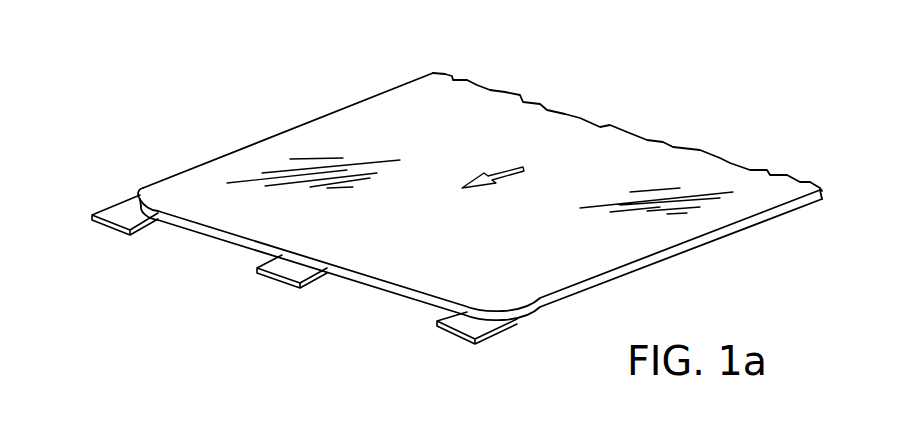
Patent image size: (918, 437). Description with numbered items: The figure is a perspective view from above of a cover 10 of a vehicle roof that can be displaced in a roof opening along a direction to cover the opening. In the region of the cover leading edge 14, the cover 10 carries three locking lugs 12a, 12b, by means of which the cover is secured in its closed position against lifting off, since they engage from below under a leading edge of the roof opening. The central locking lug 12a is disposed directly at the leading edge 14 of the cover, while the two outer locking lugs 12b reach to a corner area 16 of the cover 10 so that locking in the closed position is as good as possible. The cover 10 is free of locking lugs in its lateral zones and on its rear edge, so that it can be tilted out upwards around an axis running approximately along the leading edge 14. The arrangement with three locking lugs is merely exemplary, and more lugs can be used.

The cover 10 is at (451, 207).
The locking lug 12a is at (290, 270).
The locking lug 12b is at (117, 215).
The cover leading edge 14 is at (240, 223).
The corner area 16 is at (175, 192).